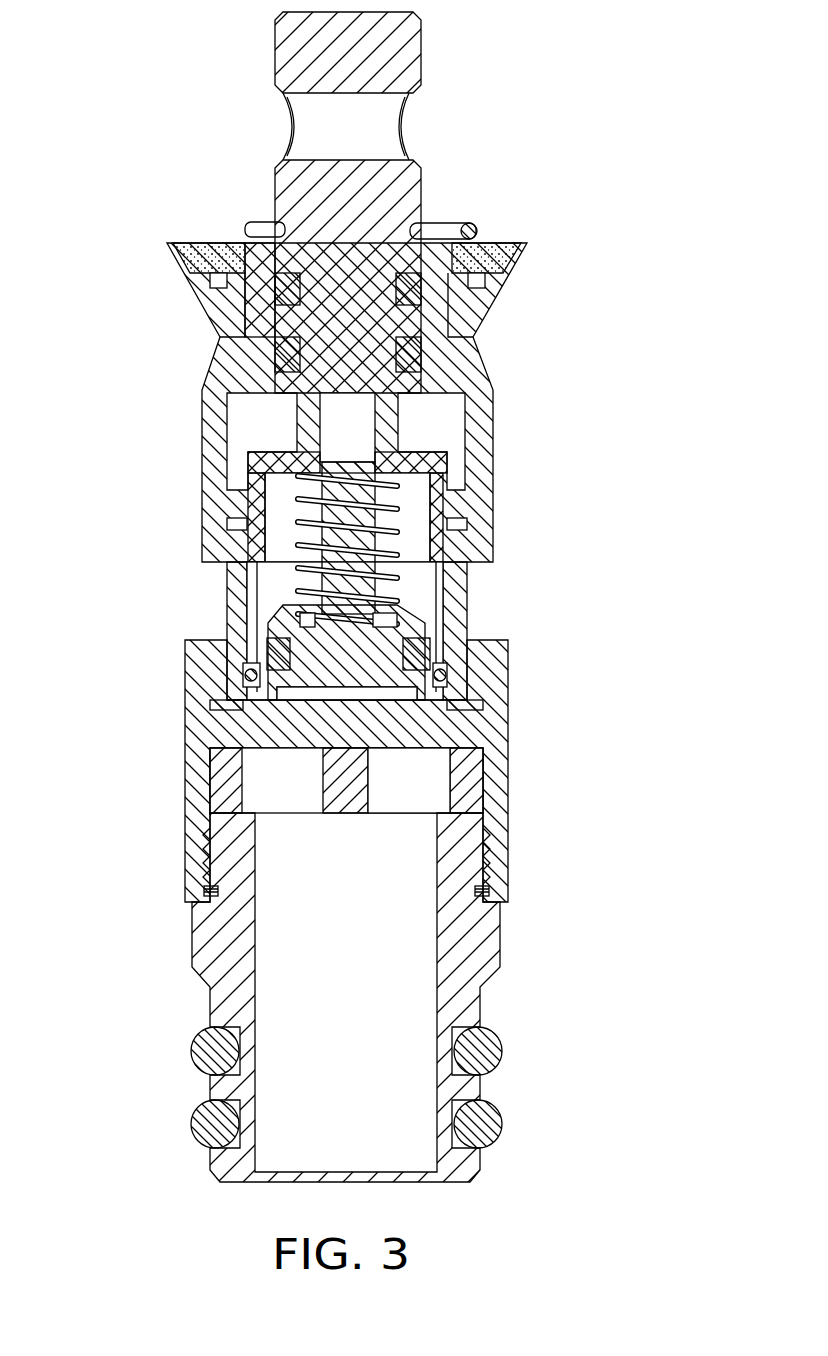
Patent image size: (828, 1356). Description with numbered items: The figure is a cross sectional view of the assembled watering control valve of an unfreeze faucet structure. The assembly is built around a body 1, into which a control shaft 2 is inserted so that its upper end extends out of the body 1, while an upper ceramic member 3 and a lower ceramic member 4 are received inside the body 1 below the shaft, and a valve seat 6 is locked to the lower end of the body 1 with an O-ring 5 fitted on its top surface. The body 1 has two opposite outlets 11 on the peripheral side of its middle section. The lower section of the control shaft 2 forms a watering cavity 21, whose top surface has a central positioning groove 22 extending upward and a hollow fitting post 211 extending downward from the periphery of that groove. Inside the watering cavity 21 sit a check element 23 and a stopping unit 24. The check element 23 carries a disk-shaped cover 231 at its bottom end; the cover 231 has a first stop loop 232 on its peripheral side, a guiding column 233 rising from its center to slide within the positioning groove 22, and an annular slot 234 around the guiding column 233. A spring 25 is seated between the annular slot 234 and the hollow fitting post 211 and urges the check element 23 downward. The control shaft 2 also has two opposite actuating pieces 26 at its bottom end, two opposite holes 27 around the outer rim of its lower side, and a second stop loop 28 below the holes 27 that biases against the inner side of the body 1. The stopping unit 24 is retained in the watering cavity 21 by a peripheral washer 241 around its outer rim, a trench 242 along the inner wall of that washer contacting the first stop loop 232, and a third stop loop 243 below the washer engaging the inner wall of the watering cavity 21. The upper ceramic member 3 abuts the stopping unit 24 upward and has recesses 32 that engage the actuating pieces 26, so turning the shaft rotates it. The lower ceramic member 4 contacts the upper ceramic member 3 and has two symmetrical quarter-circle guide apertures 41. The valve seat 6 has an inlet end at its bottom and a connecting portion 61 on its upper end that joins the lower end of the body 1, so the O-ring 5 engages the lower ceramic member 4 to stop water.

The body 1 is at (496, 405).
The control shaft 2 is at (427, 165).
The upper ceramic member 3 is at (282, 771).
The lower ceramic member 4 is at (394, 815).
The O-ring 5 is at (208, 826).
The valve seat 6 is at (346, 997).
The outlets 11 is at (482, 586).
The watering cavity 21 is at (269, 506).
The positioning groove 22 is at (343, 435).
The check element 23 is at (356, 673).
The stopping unit 24 is at (252, 656).
The spring 25 is at (388, 522).
The actuating pieces 26 is at (238, 706).
The holes 27 is at (413, 587).
The second stop loop 28 is at (470, 678).
The recesses 32 is at (207, 734).
The guide apertures 41 is at (410, 795).
The connecting portion 61 is at (487, 875).
The hollow fitting post 211 is at (307, 498).
The disk-shaped cover 231 is at (432, 662).
The first stop loop 232 is at (420, 650).
The guiding column 233 is at (317, 553).
The annular slot 234 is at (312, 615).
The peripheral washer 241 is at (266, 672).
The trench 242 is at (248, 669).
The third stop loop 243 is at (478, 699).